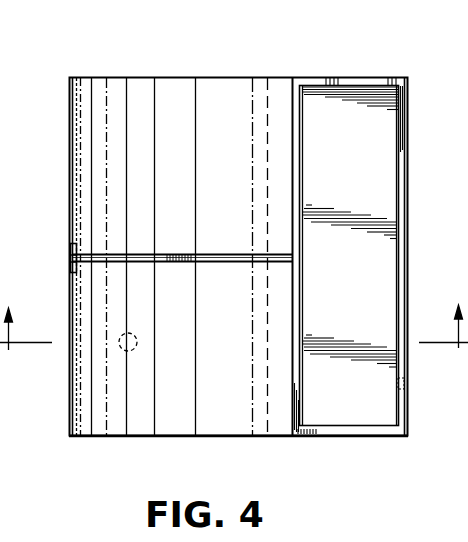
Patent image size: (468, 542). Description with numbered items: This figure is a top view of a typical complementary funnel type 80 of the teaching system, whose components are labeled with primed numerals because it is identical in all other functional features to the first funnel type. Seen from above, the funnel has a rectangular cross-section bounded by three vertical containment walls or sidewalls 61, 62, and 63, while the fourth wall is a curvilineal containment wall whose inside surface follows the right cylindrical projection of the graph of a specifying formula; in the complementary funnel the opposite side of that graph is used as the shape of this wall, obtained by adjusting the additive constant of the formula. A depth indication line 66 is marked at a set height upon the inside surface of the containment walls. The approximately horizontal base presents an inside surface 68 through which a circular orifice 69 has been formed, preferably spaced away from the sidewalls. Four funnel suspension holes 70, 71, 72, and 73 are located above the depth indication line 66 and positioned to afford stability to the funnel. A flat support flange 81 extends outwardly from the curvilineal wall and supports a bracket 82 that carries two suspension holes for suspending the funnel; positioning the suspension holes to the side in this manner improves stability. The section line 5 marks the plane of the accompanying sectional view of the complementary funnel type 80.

The vertical containment wall 61 is at (242, 77).
The vertical containment wall 62 is at (84, 149).
The vertical containment wall 63 is at (137, 437).
The depth indication line 66 is at (265, 172).
The inside surface of the base 68 is at (363, 196).
The circular orifice 69 is at (137, 338).
The funnel suspension hole 70 is at (69, 248).
The funnel suspension hole 71 is at (401, 131).
The funnel suspension hole 72 is at (69, 266).
The funnel suspension hole 73 is at (404, 384).
The complementary funnel type 80 is at (131, 70).
The flat support flange 81 is at (146, 253).
The bracket 82 is at (76, 250).
The section line 5- 5 is at (234, 317).